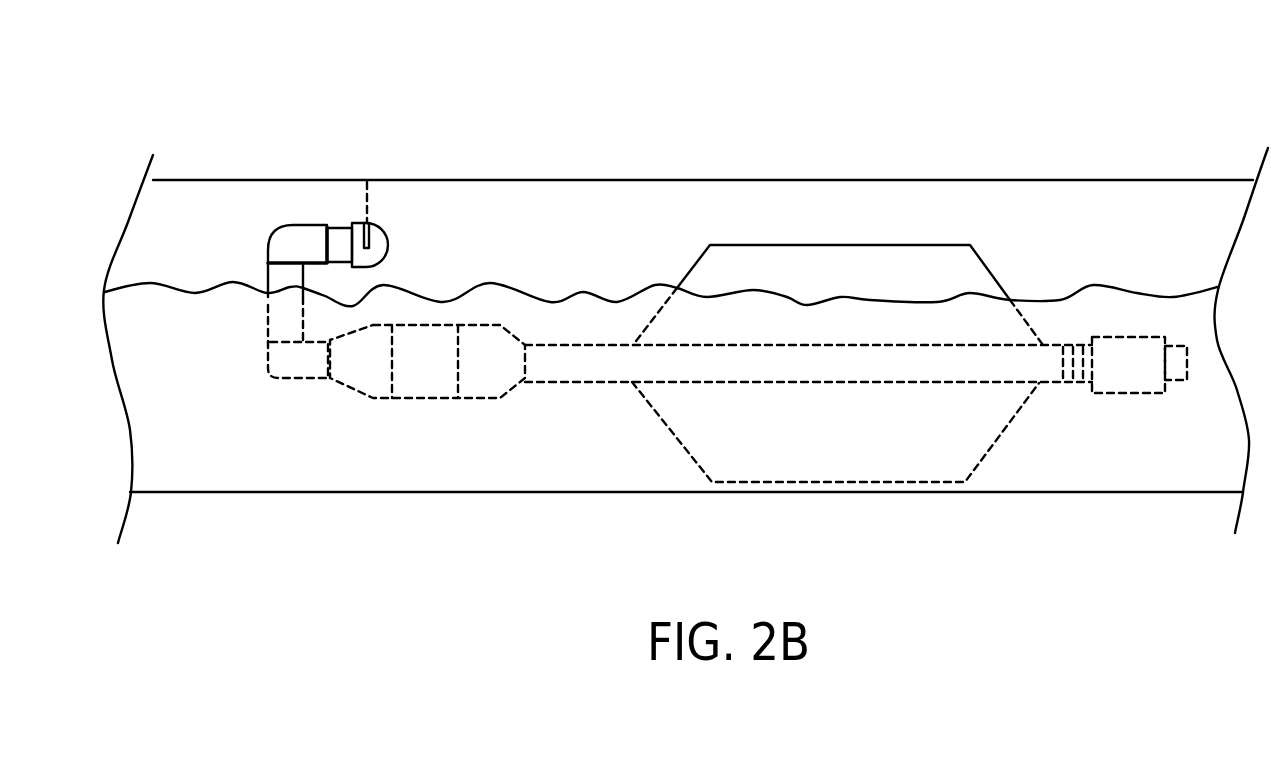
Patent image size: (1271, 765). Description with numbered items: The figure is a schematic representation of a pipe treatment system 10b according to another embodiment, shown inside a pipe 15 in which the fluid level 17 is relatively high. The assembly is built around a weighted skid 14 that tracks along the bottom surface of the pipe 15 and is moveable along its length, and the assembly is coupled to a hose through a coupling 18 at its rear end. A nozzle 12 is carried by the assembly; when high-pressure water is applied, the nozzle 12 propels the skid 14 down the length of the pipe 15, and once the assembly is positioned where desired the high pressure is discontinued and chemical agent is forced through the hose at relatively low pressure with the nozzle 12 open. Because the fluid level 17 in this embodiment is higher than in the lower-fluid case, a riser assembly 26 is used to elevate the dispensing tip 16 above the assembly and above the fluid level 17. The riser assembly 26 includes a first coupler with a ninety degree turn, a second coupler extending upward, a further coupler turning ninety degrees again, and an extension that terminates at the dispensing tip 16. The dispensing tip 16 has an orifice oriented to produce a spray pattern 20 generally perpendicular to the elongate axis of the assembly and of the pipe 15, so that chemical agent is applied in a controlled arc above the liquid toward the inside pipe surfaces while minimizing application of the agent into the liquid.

The system 10b is at (209, 134).
The nozzle 12 is at (425, 362).
The skid 14 is at (805, 245).
The pipe 15 is at (275, 492).
The dispensing tip 16 is at (387, 230).
The fluid level 17 is at (487, 283).
The coupling 18 is at (1107, 377).
The spray pattern 20 is at (367, 205).
The riser assembly 26 is at (268, 310).